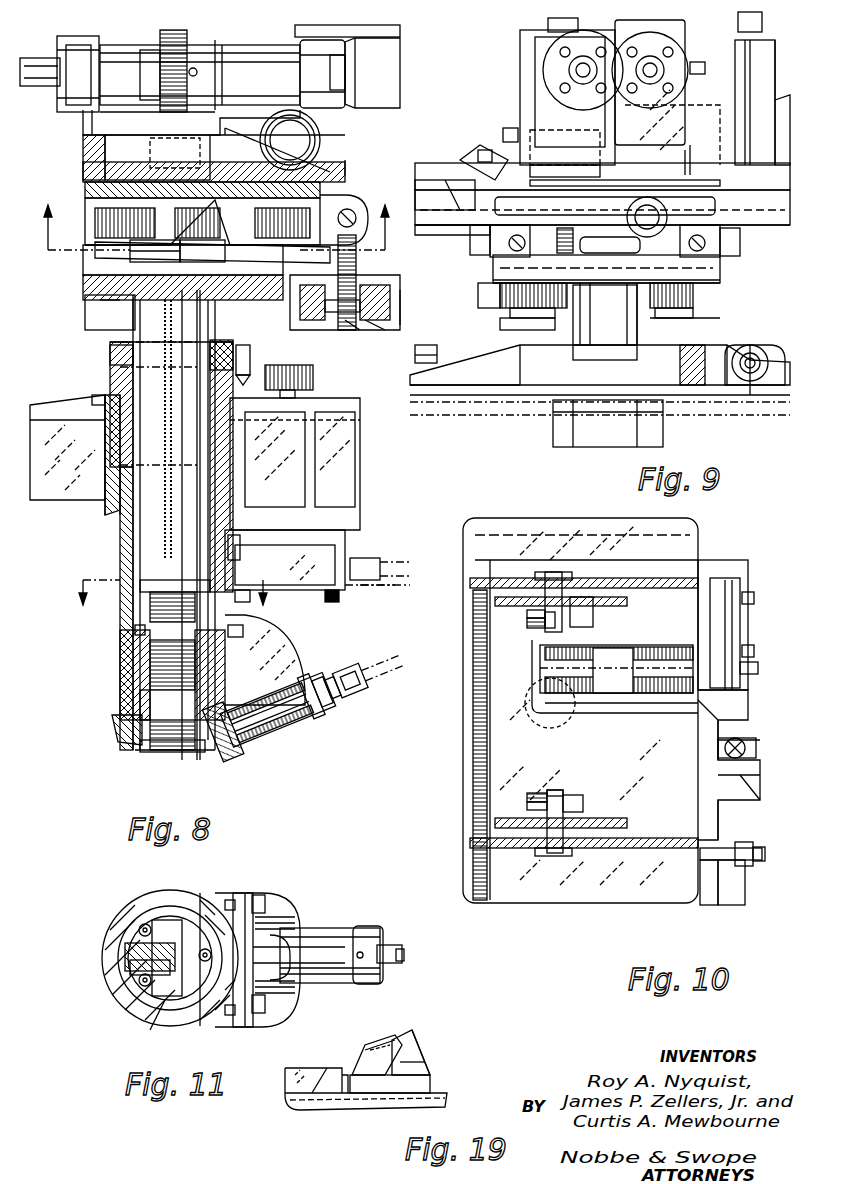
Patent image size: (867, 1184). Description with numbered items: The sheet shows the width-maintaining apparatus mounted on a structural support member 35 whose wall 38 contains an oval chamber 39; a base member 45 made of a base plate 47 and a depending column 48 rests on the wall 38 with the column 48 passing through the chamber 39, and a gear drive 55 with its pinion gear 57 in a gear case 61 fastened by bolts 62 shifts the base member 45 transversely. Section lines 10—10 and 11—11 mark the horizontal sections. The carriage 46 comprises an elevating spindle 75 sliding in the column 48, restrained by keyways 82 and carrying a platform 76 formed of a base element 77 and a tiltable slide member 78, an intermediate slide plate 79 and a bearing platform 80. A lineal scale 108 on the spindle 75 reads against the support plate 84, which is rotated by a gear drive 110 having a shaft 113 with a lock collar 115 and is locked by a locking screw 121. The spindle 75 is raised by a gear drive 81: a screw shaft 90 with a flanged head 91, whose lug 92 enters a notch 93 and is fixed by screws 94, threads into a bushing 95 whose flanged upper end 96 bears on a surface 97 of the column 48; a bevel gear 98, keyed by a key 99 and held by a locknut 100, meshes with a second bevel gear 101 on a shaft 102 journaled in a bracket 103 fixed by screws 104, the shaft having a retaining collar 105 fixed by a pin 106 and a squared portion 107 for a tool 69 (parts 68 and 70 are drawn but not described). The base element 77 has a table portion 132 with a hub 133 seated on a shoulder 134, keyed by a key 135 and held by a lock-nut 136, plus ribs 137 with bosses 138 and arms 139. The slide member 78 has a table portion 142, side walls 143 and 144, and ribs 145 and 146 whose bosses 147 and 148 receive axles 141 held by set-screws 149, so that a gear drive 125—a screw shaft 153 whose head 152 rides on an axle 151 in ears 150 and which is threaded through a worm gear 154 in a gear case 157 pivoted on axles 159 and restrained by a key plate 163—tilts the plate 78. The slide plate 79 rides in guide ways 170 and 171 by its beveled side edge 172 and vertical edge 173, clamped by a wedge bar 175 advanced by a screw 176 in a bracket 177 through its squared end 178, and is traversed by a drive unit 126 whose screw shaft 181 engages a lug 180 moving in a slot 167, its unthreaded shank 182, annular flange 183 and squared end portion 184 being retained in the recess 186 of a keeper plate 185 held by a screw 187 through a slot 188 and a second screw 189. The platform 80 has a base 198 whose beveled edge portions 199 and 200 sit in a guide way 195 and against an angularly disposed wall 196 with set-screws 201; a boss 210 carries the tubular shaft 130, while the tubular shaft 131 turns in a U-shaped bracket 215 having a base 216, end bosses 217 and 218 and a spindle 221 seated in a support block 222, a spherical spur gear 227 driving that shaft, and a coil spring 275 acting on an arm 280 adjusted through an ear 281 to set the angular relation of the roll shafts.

In FIG. 8, the section line 10— 10 is at (30, 228).
In FIG. 8, the section line 11— 11 is at (286, 603).
In FIG. 8, the structural support member 35 is at (58, 462).
In FIG. 9, the structural support member 35 is at (425, 410).
In FIG. 8, the wall 38 is at (40, 405).
In FIG. 8, the chamber 39 is at (102, 470).
In FIG. 8, the base member 45 is at (118, 490).
In FIG. 9, the base member 45 is at (480, 375).
In FIG. 8, the roll supporting carriage 46 is at (345, 138).
In FIG. 9, the roll supporting carriage 46 is at (500, 328).
In FIG. 8, the base plate 47 is at (108, 395).
In FIG. 9, the base plate 47 is at (530, 388).
In FIG. 8, the column 48 is at (125, 515).
In FIG. 9, the column 48 is at (565, 430).
In FIG. 11, the column 48 is at (118, 920).
In FIG. 8, the gear drive 55 is at (318, 385).
In FIG. 8, the pinion gear 57 is at (290, 372).
In FIG. 8, the gear case 61 is at (320, 528).
In FIG. 8, the bolts 62 is at (334, 598).
In FIG. 8, the coupling 68 is at (372, 558).
In FIG. 8, the tool 69 is at (395, 568).
In FIG. 8, the key 70 is at (95, 398).
In FIG. 8, the elevating spindle 75 is at (138, 330).
In FIG. 9, the elevating spindle 75 is at (600, 320).
In FIG. 10, the elevating spindle 75 is at (572, 722).
In FIG. 11, the elevating spindle 75 is at (200, 915).
In FIG. 8, the platform 76 is at (83, 277).
In FIG. 9, the platform 76 is at (720, 310).
In FIG. 8, the base element 77 is at (83, 263).
In FIG. 9, the base element 77 is at (718, 287).
In FIG. 8, the tiltable slide member 78 is at (110, 240).
In FIG. 9, the tiltable slide member 78 is at (455, 205).
In FIG. 10, the tiltable slide member 78 is at (490, 737).
In FIG. 19, the tiltable slide member 78 is at (295, 1075).
In FIG. 8, the intermediate slide plate 79 is at (100, 188).
In FIG. 9, the intermediate slide plate 79 is at (480, 232).
In FIG. 10, the intermediate slide plate 79 is at (548, 655).
In FIG. 19, the intermediate slide plate 79 is at (420, 1085).
In FIG. 8, the bearing platform 80 is at (80, 145).
In FIG. 9, the bearing platform 80 is at (755, 95).
In FIG. 19, the bearing platform 80 is at (418, 1043).
In FIG. 8, the gear drive 81 is at (180, 752).
In FIG. 8, the keyways 82 is at (125, 345).
In FIG. 8, the support plate 84 is at (115, 362).
In FIG. 9, the support plate 84 is at (695, 370).
In FIG. 8, the screw shaft 90 is at (150, 590).
In FIG. 11, the screw shaft 90 is at (165, 1000).
In FIG. 8, the flanged head 91 is at (200, 575).
In FIG. 11, the flanged head 91 is at (172, 925).
In FIG. 8, the lug 92 is at (148, 540).
In FIG. 11, the lug 92 is at (128, 955).
In FIG. 11, the notch 93 is at (130, 970).
In FIG. 8, the screws 94 is at (235, 545).
In FIG. 11, the screws 94 is at (143, 922).
In FIG. 8, the bushing 95 is at (150, 660).
In FIG. 8, the flanged upper end 96 is at (135, 628).
In FIG. 8, the surface 97 is at (130, 648).
In FIG. 8, the bevel gear 98 is at (112, 722).
In FIG. 8, the key 99 is at (145, 705).
In FIG. 8, the locknut 100 is at (150, 728).
In FIG. 8, the second bevel gear 101 is at (223, 732).
In FIG. 8, the shaft 102 is at (370, 672).
In FIG. 11, the shaft 102 is at (390, 950).
In FIG. 8, the bracket 103 is at (277, 709).
In FIG. 11, the bracket 103 is at (312, 940).
In FIG. 8, the screws 104 is at (268, 645).
In FIG. 11, the screws 104 is at (262, 900).
In FIG. 8, the retaining collar 105 is at (311, 696).
In FIG. 11, the retaining collar 105 is at (368, 938).
In FIG. 8, the pin 106 is at (323, 692).
In FIG. 11, the pin 106 is at (363, 960).
In FIG. 8, the squared portion 107 is at (332, 688).
In FIG. 11, the squared portion 107 is at (404, 957).
In FIG. 8, the lineal scale 108 is at (200, 333).
In FIG. 9, the gear drive 110 is at (752, 345).
In FIG. 9, the shaft 113 is at (758, 358).
In FIG. 9, the lock collar 115 is at (752, 380).
In FIG. 8, the locking screw 121 is at (255, 352).
In FIG. 8, the gear drive 125 is at (402, 298).
In FIG. 10, the gear drive 125 is at (725, 800).
In FIG. 10, the drive unit 126 is at (730, 710).
In FIG. 9, the tubular shaft 130 is at (670, 70).
In FIG. 8, the tubular shaft 131 is at (44, 70).
In FIG. 9, the tubular shaft 131 is at (570, 72).
In FIG. 8, the table portion 132 is at (90, 295).
In FIG. 8, the hub 133 is at (100, 300).
In FIG. 8, the shoulder 134 is at (130, 302).
In FIG. 8, the key 135 is at (210, 252).
In FIG. 8, the lock-nut 136 is at (175, 248).
In FIG. 9, the lock-nut 136 is at (615, 250).
In FIG. 9, the ribs 137 is at (725, 262).
In FIG. 10, the ribs 137 is at (620, 598).
In FIG. 10, the bosses 138 is at (527, 614).
In FIG. 8, the arms 139 is at (255, 335).
In FIG. 9, the arms 139 is at (480, 292).
In FIG. 9, the axles 141 is at (740, 240).
In FIG. 10, the axles 141 is at (545, 575).
In FIG. 8, the table portion 142 is at (110, 205).
In FIG. 10, the table portion 142 is at (505, 770).
In FIG. 10, the side wall 143 is at (473, 795).
In FIG. 10, the side wall 144 is at (700, 575).
In FIG. 8, the ribs 145 is at (300, 252).
In FIG. 9, the ribs 145 is at (740, 255).
In FIG. 10, the ribs 145 is at (605, 580).
In FIG. 10, the ribs 146 is at (585, 622).
In FIG. 10, the bosses 147 is at (538, 578).
In FIG. 10, the bosses 148 is at (540, 632).
In FIG. 9, the set-screws 149 is at (557, 243).
In FIG. 10, the set-screws 149 is at (527, 623).
In FIG. 10, the ears 150 is at (748, 740).
In FIG. 8, the axle 151 is at (358, 205).
In FIG. 10, the axle 151 is at (745, 785).
In FIG. 10, the head 152 is at (745, 750).
In FIG. 8, the screw shaft 153 is at (357, 258).
In FIG. 10, the screw shaft 153 is at (748, 760).
In FIG. 8, the worm gear 154 is at (355, 325).
In FIG. 8, the gear case 157 is at (380, 325).
In FIG. 9, the axles 159 is at (510, 312).
In FIG. 8, the key plate 163 is at (385, 285).
In FIG. 9, the rectangular slot 167 is at (620, 200).
In FIG. 10, the rectangular slot 167 is at (532, 695).
In FIG. 9, the guide way 170 is at (778, 178).
In FIG. 9, the guide way 171 is at (445, 195).
In FIG. 19, the guide way 171 is at (295, 1090).
In FIG. 9, the beveled side edge 172 is at (780, 185).
In FIG. 19, the edge 173 is at (348, 1085).
In FIG. 9, the wedge bar 175 is at (465, 185).
In FIG. 19, the wedge bar 175 is at (330, 1085).
In FIG. 10, the screw 176 is at (708, 870).
In FIG. 10, the bracket 177 is at (735, 880).
In FIG. 10, the squared end 178 is at (760, 860).
In FIG. 9, the lug 180 is at (668, 208).
In FIG. 10, the lug 180 is at (615, 668).
In FIG. 10, the screw shaft 181 is at (640, 680).
In FIG. 10, the unthreaded shank 182 is at (740, 705).
In FIG. 10, the annular flange 183 is at (740, 690).
In FIG. 10, the squared end portion 184 is at (758, 668).
In FIG. 10, the keeper plate 185 is at (735, 590).
In FIG. 10, the recess 186 is at (754, 651).
In FIG. 10, the screw 187 is at (754, 598).
In FIG. 10, the slot 188 is at (740, 625).
In FIG. 10, the second screw 189 is at (745, 640).
In FIG. 9, the guide way 195 is at (745, 150).
In FIG. 9, the angularly disposed wall 196 is at (483, 150).
In FIG. 19, the angularly disposed wall 196 is at (385, 1048).
In FIG. 8, the base 198 is at (120, 170).
In FIG. 9, the base 198 is at (660, 135).
In FIG. 19, the base 198 is at (420, 1050).
In FIG. 9, the beveled edge portion 199 is at (750, 168).
In FIG. 9, the beveled edge portion 200 is at (520, 170).
In FIG. 19, the beveled edge portion 200 is at (415, 1062).
In FIG. 9, the set-screws 201 is at (478, 152).
In FIG. 19, the set-screws 201 is at (365, 1050).
In FIG. 9, the boss 210 is at (660, 65).
In FIG. 8, the U-shaped bracket 215 is at (235, 66).
In FIG. 9, the U-shaped bracket 215 is at (545, 70).
In FIG. 8, the base 216 is at (115, 123).
In FIG. 8, the end boss 217 is at (82, 80).
In FIG. 8, the end boss 218 is at (305, 70).
In FIG. 8, the spindle 221 is at (240, 132).
In FIG. 9, the spindle 221 is at (508, 130).
In FIG. 8, the support block 222 is at (125, 145).
In FIG. 9, the support block 222 is at (585, 138).
In FIG. 8, the spherical spur gear 227 is at (180, 48).
In FIG. 8, the coil spring 275 is at (318, 148).
In FIG. 8, the arm 280 is at (258, 112).
In FIG. 8, the ear 281 is at (322, 160).